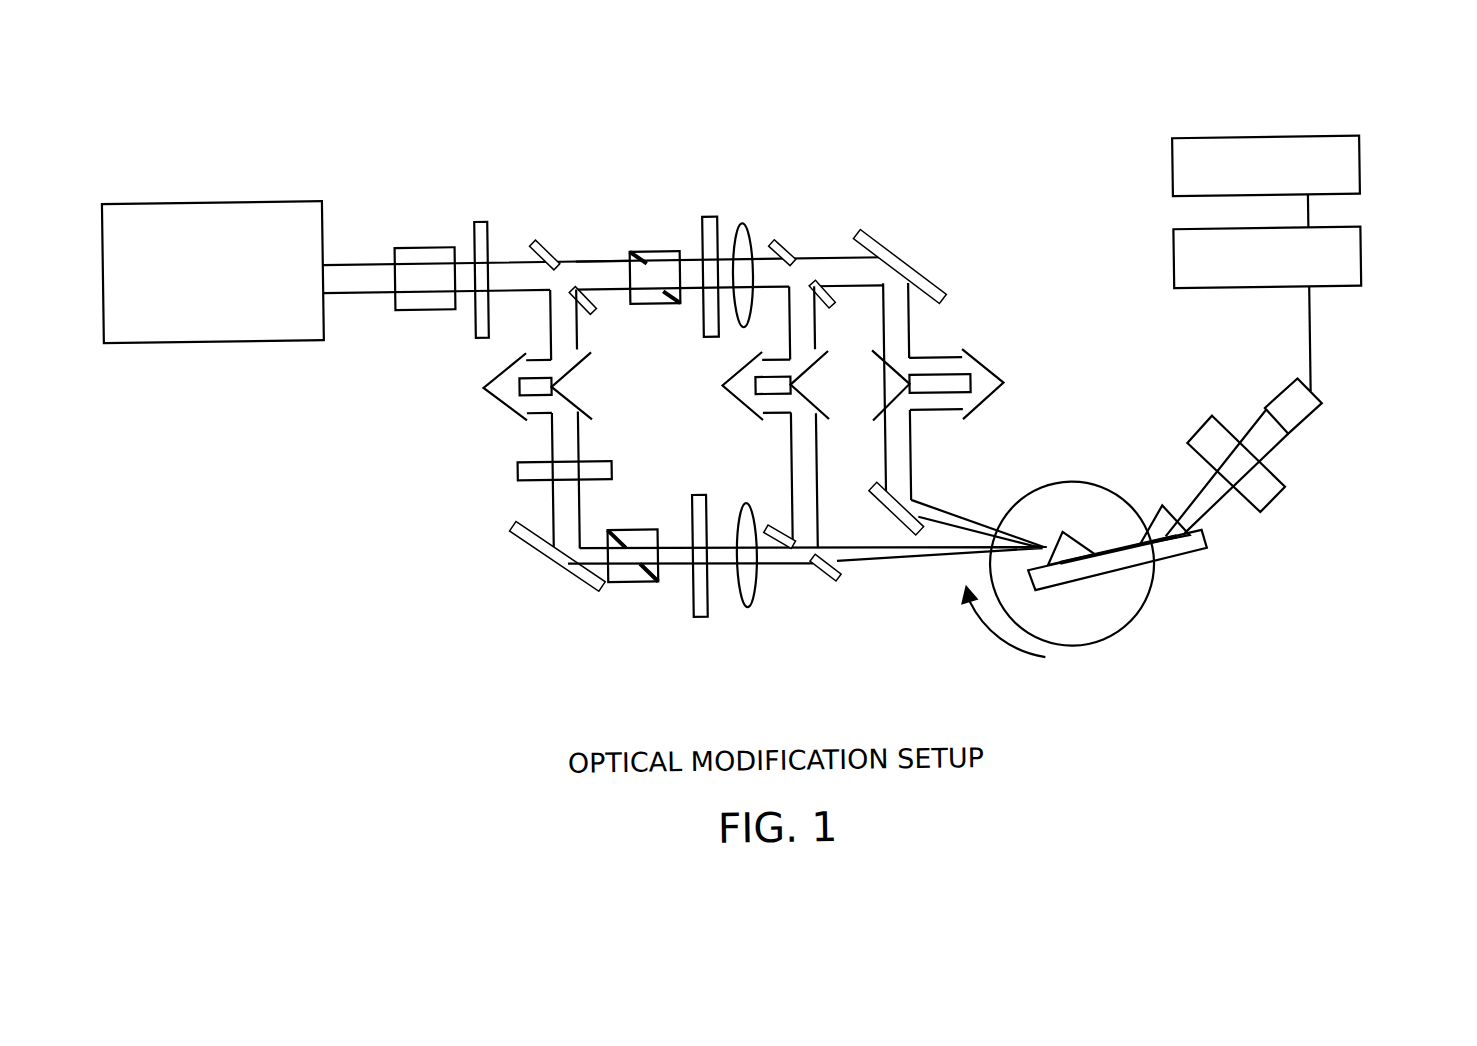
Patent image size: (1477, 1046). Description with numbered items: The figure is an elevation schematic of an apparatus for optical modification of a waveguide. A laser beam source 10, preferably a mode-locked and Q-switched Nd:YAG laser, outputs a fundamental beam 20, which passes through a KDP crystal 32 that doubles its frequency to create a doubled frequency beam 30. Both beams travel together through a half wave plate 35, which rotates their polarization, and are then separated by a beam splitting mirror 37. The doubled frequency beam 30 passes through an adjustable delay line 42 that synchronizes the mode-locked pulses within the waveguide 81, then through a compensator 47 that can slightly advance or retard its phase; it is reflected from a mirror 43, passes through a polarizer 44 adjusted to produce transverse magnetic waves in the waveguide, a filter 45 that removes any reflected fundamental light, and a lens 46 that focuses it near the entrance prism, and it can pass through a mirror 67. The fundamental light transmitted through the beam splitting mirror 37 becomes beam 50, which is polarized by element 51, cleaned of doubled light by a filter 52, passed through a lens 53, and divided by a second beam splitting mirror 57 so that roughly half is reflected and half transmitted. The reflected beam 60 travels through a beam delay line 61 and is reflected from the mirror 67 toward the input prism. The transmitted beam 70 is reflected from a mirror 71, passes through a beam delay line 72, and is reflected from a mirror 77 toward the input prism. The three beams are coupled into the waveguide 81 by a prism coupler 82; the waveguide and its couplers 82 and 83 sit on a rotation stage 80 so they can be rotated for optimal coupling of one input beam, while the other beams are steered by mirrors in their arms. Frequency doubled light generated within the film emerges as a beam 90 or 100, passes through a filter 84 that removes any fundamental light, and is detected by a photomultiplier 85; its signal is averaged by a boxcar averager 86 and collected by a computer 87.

The laser beam source 10 is at (165, 202).
The fundamental beam 20 is at (338, 295).
The doubled frequency beam 30 is at (576, 314).
The KDP crystal 32 is at (430, 250).
The half wave plate 35 is at (470, 361).
The beam splitting mirror 37 is at (535, 245).
The delay line 42 is at (568, 374).
The mirror 43 is at (543, 560).
The polarizer 44 is at (631, 588).
The filter 45 is at (698, 624).
The lens 46 is at (744, 614).
The compensator 47 is at (515, 474).
The beam 50 is at (598, 266).
The polarizing element 51 is at (652, 255).
The filter 52 is at (708, 220).
The lens 53 is at (745, 229).
The beam splitting mirror 57 is at (773, 248).
The reflected beam 60 is at (789, 480).
The beam delay line 61 is at (738, 409).
The mirror 67 is at (833, 578).
The transmitted beam 70 is at (914, 478).
The mirror 71 is at (910, 276).
The beam delay line 72 is at (990, 377).
The mirror 77 is at (885, 518).
The rotation stage 80 is at (1085, 641).
The waveguide 81 is at (1163, 566).
The prism coupler 82 is at (1063, 552).
The coupler 83 is at (1162, 516).
The filter 84 is at (1199, 455).
The photomultiplier 85 is at (1302, 420).
The boxcar averager 86 is at (1356, 269).
The computer 87 is at (1354, 182).
The frequency doubled beam 90 is at (1310, 471).
The frequency doubled beam 100 is at (1271, 455).